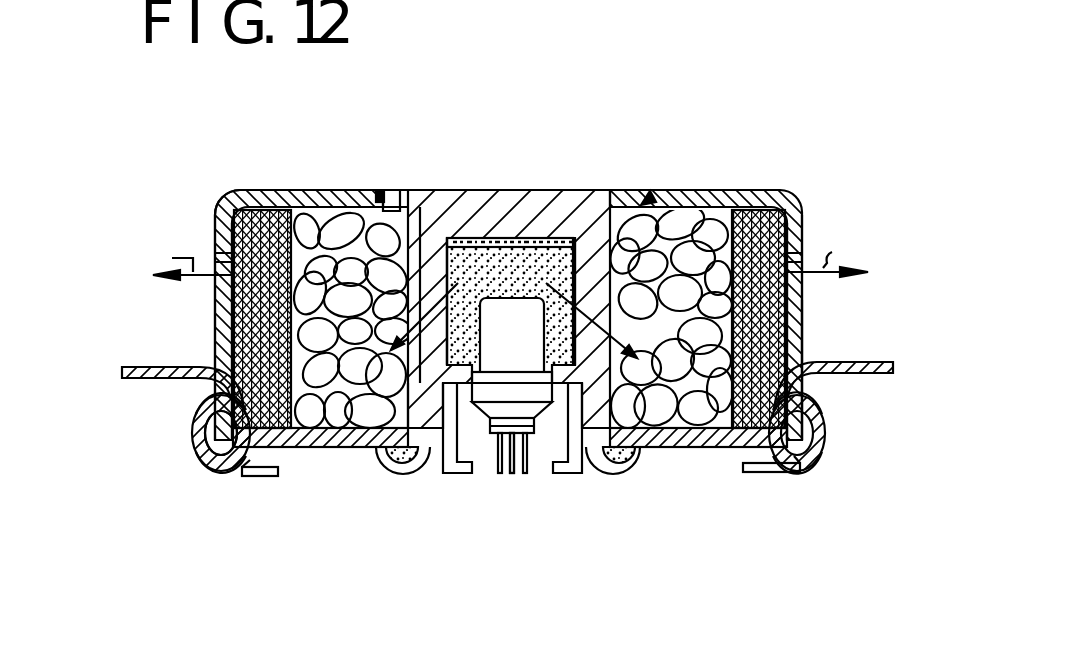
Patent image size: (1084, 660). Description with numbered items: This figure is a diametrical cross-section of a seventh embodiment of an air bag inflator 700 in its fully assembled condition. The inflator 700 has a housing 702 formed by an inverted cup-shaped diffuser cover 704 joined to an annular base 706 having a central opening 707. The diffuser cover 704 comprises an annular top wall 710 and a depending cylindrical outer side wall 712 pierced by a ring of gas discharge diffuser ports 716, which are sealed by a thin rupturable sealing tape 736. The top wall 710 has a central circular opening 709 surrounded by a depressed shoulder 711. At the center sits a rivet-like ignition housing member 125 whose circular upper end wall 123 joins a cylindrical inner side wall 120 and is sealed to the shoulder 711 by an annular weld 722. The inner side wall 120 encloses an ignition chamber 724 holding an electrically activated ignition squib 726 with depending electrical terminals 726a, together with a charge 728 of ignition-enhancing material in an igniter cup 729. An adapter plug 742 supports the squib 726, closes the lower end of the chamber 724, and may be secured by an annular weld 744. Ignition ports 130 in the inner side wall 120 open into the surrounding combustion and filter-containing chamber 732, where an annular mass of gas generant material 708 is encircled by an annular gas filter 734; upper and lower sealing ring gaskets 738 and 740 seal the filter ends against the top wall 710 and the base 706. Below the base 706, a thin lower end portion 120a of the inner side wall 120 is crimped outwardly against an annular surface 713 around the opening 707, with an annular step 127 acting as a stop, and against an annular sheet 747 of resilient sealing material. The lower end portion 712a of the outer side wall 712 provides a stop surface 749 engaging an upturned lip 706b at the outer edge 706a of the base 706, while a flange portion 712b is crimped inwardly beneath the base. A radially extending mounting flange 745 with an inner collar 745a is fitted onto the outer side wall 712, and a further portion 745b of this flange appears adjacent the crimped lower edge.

The air bag inflator 700 is at (533, 580).
The housing 702 is at (174, 318).
The diffuser cover 704 is at (800, 177).
The base 706 is at (335, 465).
The outer edge of the base 706a is at (235, 462).
The upturned lip 706b is at (212, 437).
The central opening 707 is at (429, 473).
The gas generant material 708 is at (314, 301).
The circular opening 709 is at (408, 210).
The annular top wall 710 is at (292, 193).
The shoulder 711 is at (397, 203).
The outer side wall 712 is at (803, 317).
The lower end portion of the outer side wall 712a is at (247, 475).
The flange portion 712b is at (289, 457).
The annular surface 713 is at (402, 474).
The gas discharge diffuser ports 716 is at (230, 296).
The annular weld 722 is at (377, 197).
The ignition chamber 724 is at (512, 365).
The ignition squib 726 is at (498, 402).
The electrical terminals 726a is at (514, 470).
The charge of ignition-enhancing material 728 is at (531, 238).
The igniter cup 729 is at (455, 237).
The combustion and filter-containing chamber 732 is at (350, 203).
The annular gas filter 734 is at (217, 228).
The sealing tape 736 is at (217, 265).
The sealing ring gasket 738 is at (266, 208).
The sealing ring gasket 740 is at (207, 398).
The adapter plug 742 is at (447, 440).
The annular weld 744 is at (585, 450).
The mounting flange 745 is at (137, 380).
The inner cylindrical collar 745a is at (207, 383).
The lead strip tab 745b is at (250, 476).
The annular sheet of resilient sealing material 747 is at (307, 450).
The stop surface 749 is at (200, 408).
The inner side wall 120 is at (428, 200).
The lower end portion of the inner side wall 120a is at (404, 475).
The upper end wall 123 is at (558, 200).
The ignition housing member 125 is at (505, 185).
The annular step 127 is at (650, 455).
The ignition ports 130 is at (580, 288).